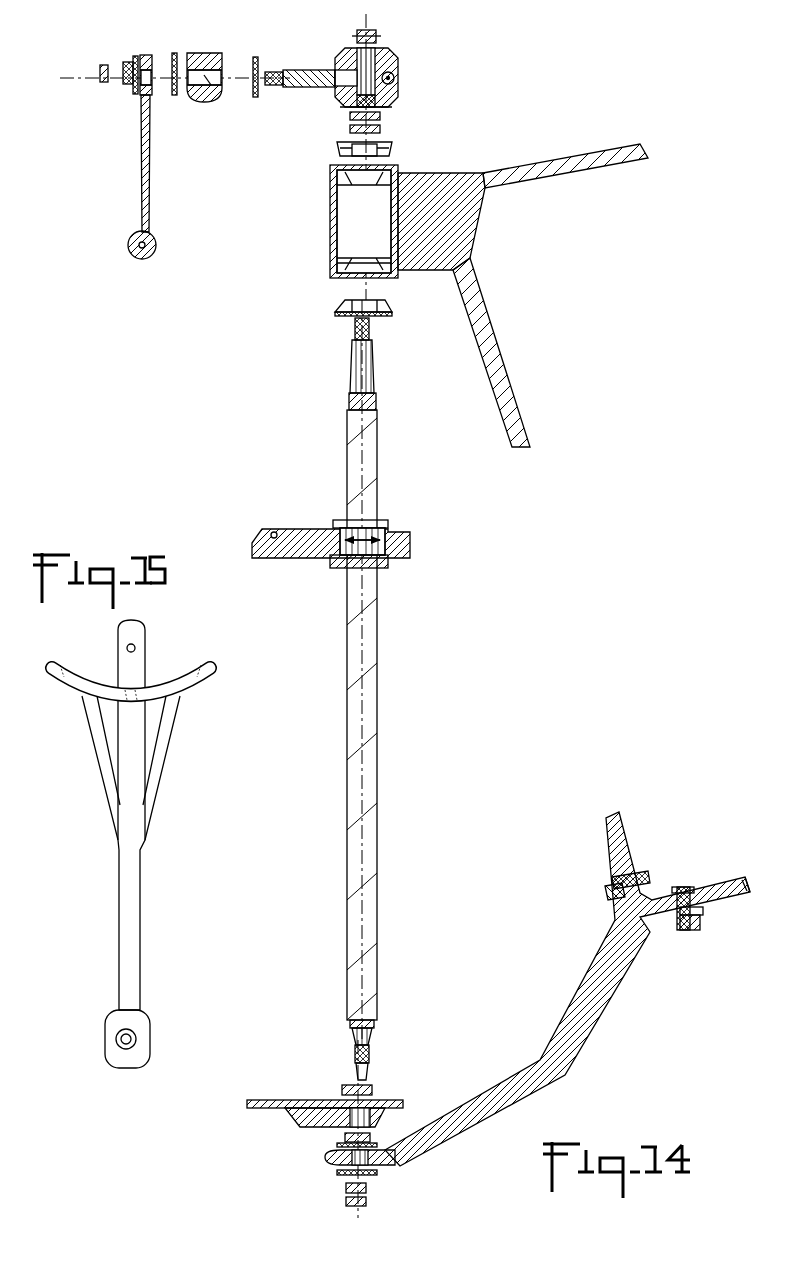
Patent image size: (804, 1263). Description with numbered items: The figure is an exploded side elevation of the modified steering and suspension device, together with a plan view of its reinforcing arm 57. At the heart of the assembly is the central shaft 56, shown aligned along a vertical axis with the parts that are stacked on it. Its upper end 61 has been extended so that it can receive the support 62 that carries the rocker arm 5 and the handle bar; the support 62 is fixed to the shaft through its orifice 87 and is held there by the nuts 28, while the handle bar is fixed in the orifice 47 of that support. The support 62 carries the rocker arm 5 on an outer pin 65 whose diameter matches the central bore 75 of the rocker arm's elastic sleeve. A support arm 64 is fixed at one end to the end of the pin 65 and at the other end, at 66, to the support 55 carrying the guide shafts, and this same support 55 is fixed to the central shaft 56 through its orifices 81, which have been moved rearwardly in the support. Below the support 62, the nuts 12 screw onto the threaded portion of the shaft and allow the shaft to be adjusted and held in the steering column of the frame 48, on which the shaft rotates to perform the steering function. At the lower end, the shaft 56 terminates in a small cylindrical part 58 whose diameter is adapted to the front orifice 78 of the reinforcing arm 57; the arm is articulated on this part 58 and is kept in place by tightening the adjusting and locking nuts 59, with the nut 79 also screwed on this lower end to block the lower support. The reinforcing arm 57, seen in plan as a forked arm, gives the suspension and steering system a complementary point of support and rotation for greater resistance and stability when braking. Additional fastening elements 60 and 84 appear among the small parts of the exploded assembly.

In FIG. 14, the rocking arm 5 is at (203, 105).
In FIG. 14, the nuts 12 is at (383, 135).
In FIG. 14, the nuts 28 is at (378, 41).
In FIG. 14, the orifice 47 is at (395, 78).
In FIG. 14, the frame 48 is at (625, 822).
In FIG. 14, the support 55 is at (294, 792).
In FIG. 14, the central shaft 56 is at (378, 776).
In FIG. 14, the reinforcing arm 57 is at (625, 943).
In FIG. 15, the reinforcing arm 57 is at (129, 738).
In FIG. 14, the small cylindrical part 58 is at (362, 1061).
In FIG. 14, the adjusting and locking nuts 59 is at (344, 1205).
In FIG. 14, the bolts 60 is at (680, 877).
In FIG. 14, the upper end 61 is at (349, 392).
In FIG. 14, the support 62 is at (403, 62).
In FIG. 14, the support arm 64 is at (135, 218).
In FIG. 14, the outer pin 65 is at (313, 93).
In FIG. 14, the fixing point 66 is at (275, 532).
In FIG. 14, the central bore 75 is at (211, 85).
In FIG. 14, the front orifice 78 is at (358, 1160).
In FIG. 14, the nut 79 is at (338, 1137).
In FIG. 14, the orifices 81 is at (367, 530).
In FIG. 14, the washers 84 is at (122, 87).
In FIG. 14, the orifice 87 is at (385, 110).